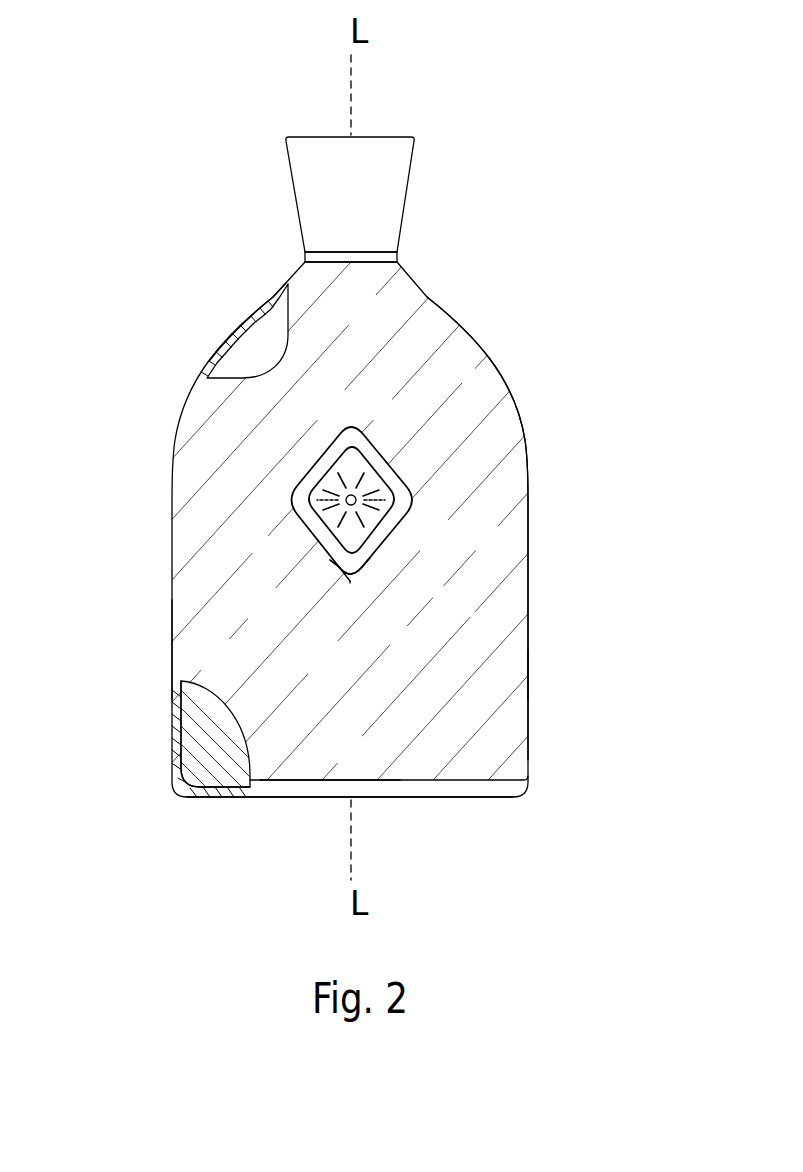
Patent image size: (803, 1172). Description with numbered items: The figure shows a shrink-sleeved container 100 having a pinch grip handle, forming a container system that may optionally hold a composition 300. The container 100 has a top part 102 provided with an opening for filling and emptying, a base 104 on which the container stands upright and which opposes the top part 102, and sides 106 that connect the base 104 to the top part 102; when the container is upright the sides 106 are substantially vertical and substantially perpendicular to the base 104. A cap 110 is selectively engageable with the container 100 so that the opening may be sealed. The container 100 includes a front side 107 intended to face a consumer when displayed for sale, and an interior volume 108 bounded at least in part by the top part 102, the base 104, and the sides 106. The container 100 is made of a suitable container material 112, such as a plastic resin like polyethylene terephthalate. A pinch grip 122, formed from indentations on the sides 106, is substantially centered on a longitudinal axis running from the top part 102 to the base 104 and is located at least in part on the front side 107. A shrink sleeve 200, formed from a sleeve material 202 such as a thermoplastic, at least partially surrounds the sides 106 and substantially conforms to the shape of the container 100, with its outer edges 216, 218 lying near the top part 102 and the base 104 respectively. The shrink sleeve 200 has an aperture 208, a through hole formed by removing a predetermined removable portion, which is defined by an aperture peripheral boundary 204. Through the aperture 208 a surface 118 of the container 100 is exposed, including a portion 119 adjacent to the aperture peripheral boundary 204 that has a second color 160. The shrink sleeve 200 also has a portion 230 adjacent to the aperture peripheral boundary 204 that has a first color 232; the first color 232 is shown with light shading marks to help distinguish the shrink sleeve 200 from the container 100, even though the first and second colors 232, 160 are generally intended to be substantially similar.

The container 100 is at (237, 311).
The top part 102 is at (441, 282).
The base 104 is at (495, 802).
The sides 106 is at (528, 550).
The front side 107 is at (435, 690).
The interior volume 108 is at (272, 330).
The cap 110 is at (400, 168).
The container material 112 is at (427, 788).
The surface 118 is at (372, 554).
The portion 119 is at (338, 565).
The pinch grip 122 is at (314, 510).
The second color 160 is at (352, 583).
The shrink sleeve 200 is at (483, 437).
The sleeve material 202 is at (242, 671).
The aperture peripheral boundary 204 is at (366, 580).
The aperture 208 is at (389, 433).
The outer edge 216 is at (354, 264).
The outer edge 218 is at (275, 778).
The portion 230 is at (323, 562).
The first color 232 is at (333, 583).
The composition 300 is at (195, 731).